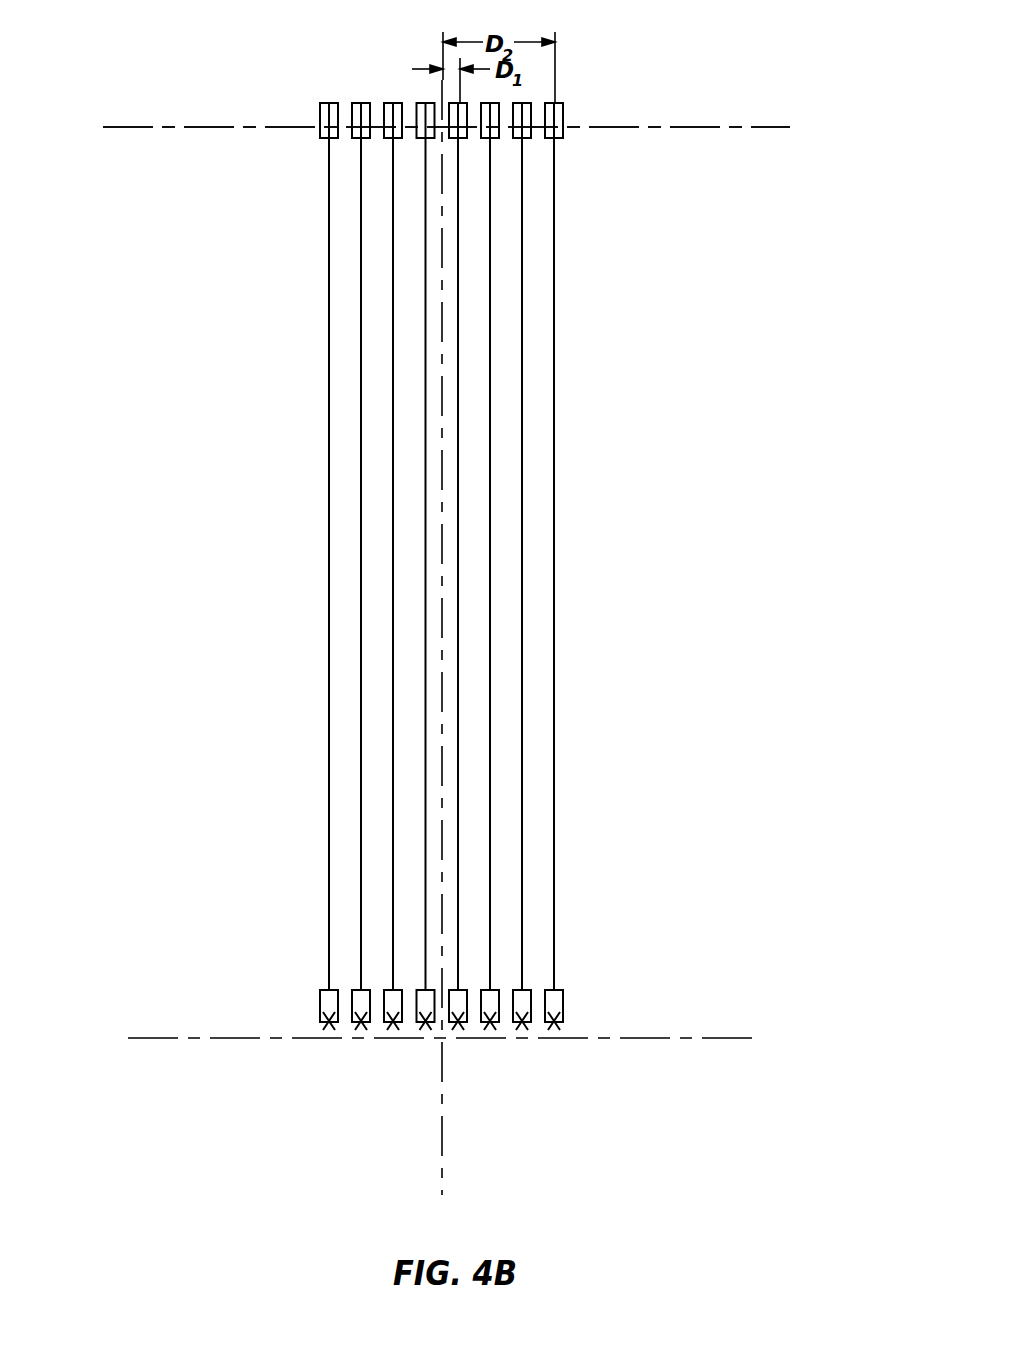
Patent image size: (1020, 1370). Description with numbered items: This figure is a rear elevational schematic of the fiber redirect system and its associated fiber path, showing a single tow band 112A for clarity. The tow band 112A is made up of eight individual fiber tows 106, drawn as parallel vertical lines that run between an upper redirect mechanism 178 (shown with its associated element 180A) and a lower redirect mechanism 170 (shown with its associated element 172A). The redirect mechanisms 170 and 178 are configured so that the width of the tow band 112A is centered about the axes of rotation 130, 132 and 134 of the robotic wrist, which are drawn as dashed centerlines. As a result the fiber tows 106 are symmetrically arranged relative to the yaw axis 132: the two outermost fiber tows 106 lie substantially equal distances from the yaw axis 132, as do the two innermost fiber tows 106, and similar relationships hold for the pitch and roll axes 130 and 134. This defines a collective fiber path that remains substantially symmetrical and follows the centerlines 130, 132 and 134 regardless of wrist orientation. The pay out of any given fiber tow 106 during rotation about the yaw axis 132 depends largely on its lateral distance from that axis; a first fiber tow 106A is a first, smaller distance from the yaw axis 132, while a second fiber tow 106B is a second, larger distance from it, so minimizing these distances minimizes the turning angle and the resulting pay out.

The fiber tows 106 is at (328, 507).
The first fiber tow 106A is at (459, 521).
The second fiber tow 106B is at (554, 577).
The tow band 112A is at (280, 716).
The axis of rotation 134 is at (429, 146).
The redirect mechanism 178 is at (628, 104).
The top edge reference line 180A is at (628, 104).
The redirect mechanism 170 is at (279, 1004).
The bottom connector array 172A is at (279, 1004).
The axis of rotation 130 is at (252, 1040).
The yaw axis 132 is at (441, 1102).